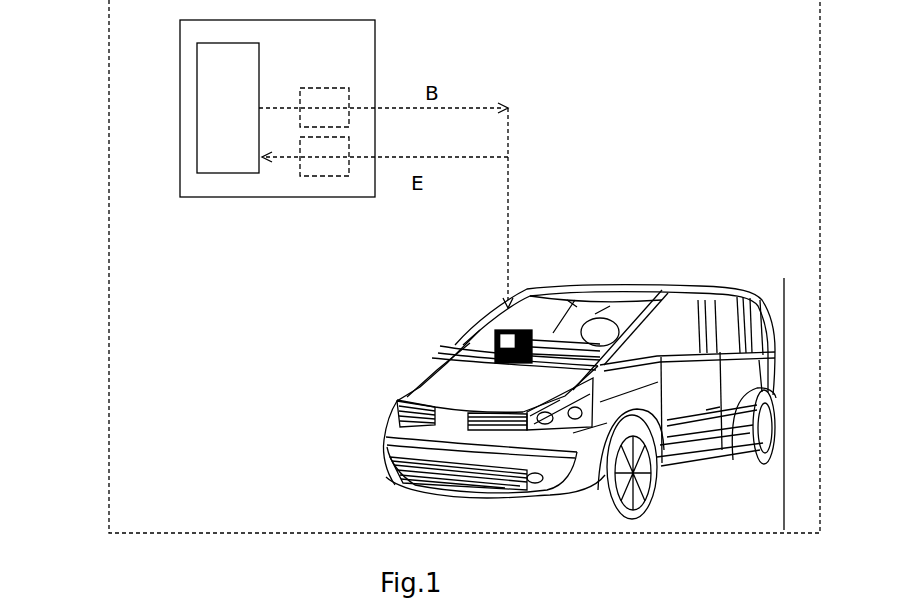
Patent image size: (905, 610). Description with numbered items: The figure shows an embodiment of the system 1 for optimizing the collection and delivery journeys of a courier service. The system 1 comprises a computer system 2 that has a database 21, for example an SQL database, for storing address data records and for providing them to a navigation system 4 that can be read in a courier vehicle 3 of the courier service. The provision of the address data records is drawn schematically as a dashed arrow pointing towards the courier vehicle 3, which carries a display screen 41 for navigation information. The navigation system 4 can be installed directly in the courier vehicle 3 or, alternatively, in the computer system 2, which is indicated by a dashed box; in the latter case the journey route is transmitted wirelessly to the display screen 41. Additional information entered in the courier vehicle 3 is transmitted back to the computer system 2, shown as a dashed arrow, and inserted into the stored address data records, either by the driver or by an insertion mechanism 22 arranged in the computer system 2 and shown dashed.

The system 1 is at (106, 188).
The computer system 2 is at (180, 72).
The database 21 is at (226, 173).
The insertion mechanism 22 is at (323, 177).
The courier vehicle 3 is at (656, 268).
The navigation system 4 is at (347, 97).
The display screen 41 is at (495, 339).